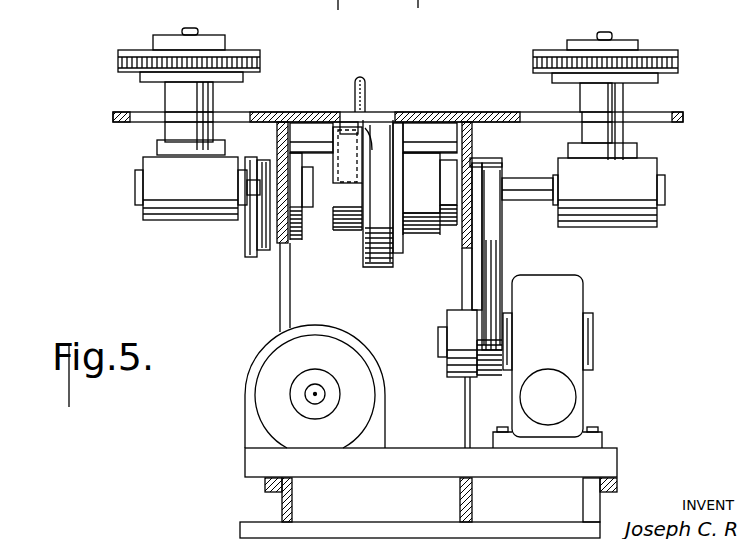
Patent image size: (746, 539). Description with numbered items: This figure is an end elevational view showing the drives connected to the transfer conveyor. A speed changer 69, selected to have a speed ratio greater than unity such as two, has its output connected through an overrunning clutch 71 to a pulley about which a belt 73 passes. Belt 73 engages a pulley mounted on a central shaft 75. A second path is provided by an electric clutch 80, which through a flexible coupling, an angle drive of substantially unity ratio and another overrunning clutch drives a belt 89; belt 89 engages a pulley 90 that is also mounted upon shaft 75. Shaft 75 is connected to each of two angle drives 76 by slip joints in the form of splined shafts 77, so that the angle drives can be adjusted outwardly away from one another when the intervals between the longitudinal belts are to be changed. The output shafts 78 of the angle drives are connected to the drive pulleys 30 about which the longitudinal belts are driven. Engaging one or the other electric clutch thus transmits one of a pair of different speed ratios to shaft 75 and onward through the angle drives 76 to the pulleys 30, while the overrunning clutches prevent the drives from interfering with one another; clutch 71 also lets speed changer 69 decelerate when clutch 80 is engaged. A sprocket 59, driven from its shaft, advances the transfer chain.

The drive pulley 30 is at (258, 53).
The sprocket 59 is at (365, 95).
The speed changer 69 is at (563, 300).
The overrunning clutch 71 is at (448, 318).
The belt 73 is at (497, 263).
The shaft 75 is at (313, 213).
The angle drive 76 is at (143, 222).
The splined shaft 77 is at (223, 220).
The output shaft 78 is at (167, 85).
The electric clutch 80 is at (360, 347).
The belt 89 is at (252, 243).
The pulley 90 is at (247, 150).